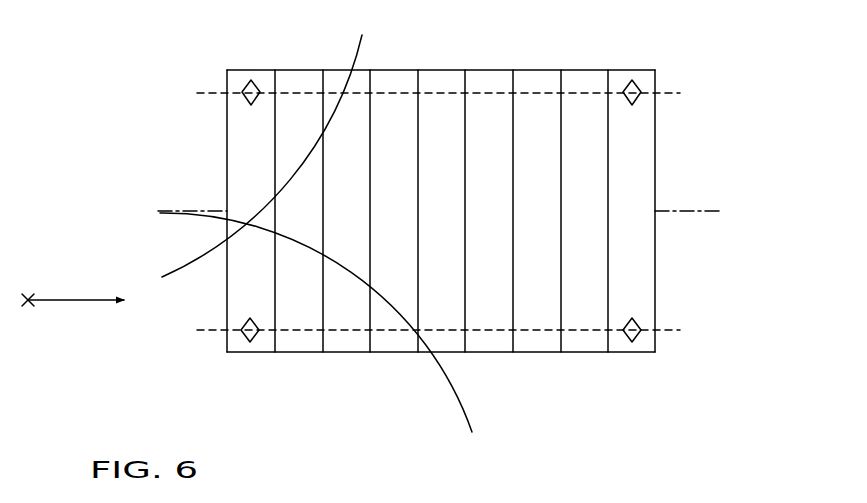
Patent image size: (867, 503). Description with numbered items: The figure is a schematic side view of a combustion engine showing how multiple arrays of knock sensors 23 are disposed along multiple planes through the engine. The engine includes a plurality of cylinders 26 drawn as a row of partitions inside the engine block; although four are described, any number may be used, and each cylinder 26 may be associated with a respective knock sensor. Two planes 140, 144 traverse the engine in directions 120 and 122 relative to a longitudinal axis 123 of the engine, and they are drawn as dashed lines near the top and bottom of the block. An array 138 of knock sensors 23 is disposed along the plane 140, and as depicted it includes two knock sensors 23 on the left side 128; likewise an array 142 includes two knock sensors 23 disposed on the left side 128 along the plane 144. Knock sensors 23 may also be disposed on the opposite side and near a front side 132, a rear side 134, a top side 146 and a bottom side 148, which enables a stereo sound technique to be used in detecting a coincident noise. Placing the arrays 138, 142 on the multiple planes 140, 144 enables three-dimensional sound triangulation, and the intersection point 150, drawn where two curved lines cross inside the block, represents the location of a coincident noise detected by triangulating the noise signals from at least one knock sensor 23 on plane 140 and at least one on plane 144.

The knock sensor 23 is at (251, 80).
The cylinder 26 is at (326, 212).
The direction 120 is at (29, 296).
The direction 122 is at (72, 301).
The longitudinal axis 123 is at (700, 213).
The left side 128 is at (637, 290).
The front side 132 is at (227, 146).
The rear side 134 is at (656, 150).
The array 138 is at (220, 72).
The plane 140 is at (674, 96).
The array 142 is at (260, 345).
The plane 144 is at (668, 333).
The top side 146 is at (445, 70).
The bottom side 148 is at (535, 353).
The intersection point 150 is at (248, 242).